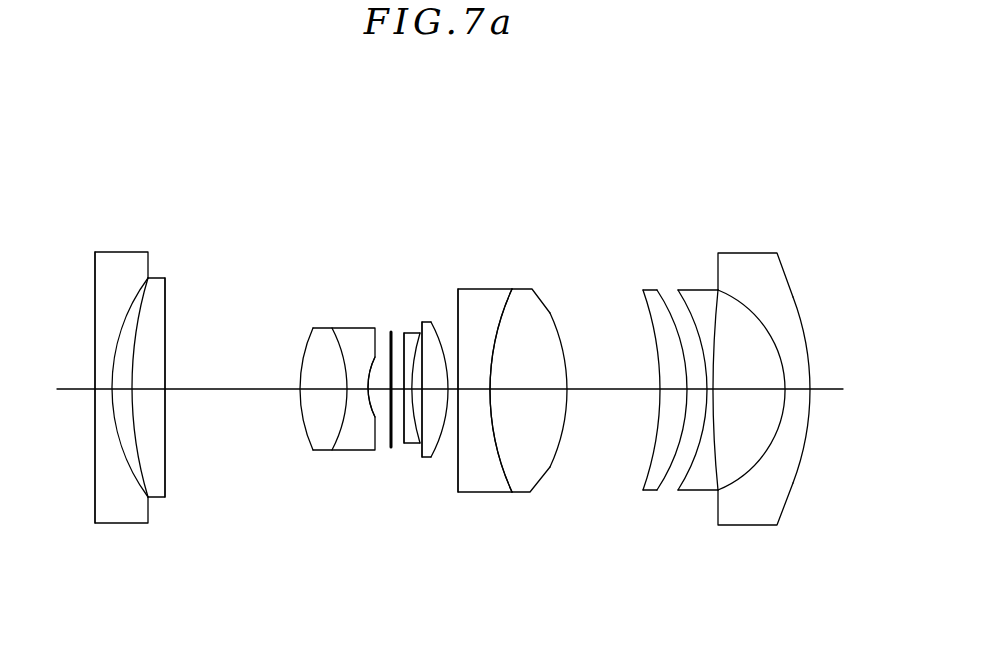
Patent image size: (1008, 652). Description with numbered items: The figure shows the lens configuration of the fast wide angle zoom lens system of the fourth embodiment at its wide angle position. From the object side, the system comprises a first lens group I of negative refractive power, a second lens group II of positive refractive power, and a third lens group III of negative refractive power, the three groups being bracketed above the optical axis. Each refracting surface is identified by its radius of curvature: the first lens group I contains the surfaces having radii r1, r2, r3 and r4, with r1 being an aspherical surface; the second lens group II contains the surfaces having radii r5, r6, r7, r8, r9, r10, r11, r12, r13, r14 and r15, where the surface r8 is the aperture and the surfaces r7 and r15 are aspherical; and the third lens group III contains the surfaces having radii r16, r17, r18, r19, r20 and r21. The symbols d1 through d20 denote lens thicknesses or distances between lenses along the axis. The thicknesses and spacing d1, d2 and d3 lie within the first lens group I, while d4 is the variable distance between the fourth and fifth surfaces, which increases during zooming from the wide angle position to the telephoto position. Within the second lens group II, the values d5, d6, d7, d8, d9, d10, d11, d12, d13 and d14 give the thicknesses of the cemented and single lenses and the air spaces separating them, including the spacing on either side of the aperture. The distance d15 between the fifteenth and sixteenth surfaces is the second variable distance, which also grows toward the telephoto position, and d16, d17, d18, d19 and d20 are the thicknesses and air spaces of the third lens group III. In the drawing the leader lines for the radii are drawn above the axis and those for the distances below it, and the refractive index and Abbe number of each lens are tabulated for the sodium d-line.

The first lens group I is at (70, 199).
The second lens group II is at (212, 122).
The third lens group III is at (870, 211).
The radius of curvature of first surface r1 is at (95, 373).
The radius of curvature of second surface r2 is at (113, 367).
The radius of curvature of third surface r3 is at (138, 373).
The radius of curvature of fourth surface r4 is at (166, 373).
The radius of curvature of fifth surface r5 is at (302, 367).
The radius of curvature of sixth surface r6 is at (342, 355).
The radius of curvature of seventh surface r7 is at (362, 357).
The aperture surface r8 is at (390, 332).
The radius of curvature of ninth surface r9 is at (411, 328).
The radius of curvature of tenth surface r10 is at (431, 322).
The radius of curvature of eleventh surface r11 is at (421, 325).
The radius of curvature of twelfth surface r12 is at (441, 323).
The radius of curvature of thirteenth surface r13 is at (470, 289).
The radius of curvature of fourteenth surface r14 is at (498, 340).
The radius of curvature of fifteenth surface r15 is at (550, 313).
The radius of curvature of sixteenth surface r16 is at (652, 323).
The radius of curvature of seventeenth surface r17 is at (667, 310).
The radius of curvature of eighteenth surface r18 is at (683, 327).
The radius of curvature of nineteenth surface r19 is at (712, 342).
The radius of curvature of twentieth surface r20 is at (772, 340).
The radius of curvature of twenty-first surface r21 is at (805, 343).
The lens thickness d1 is at (102, 389).
The distance d2 is at (123, 389).
The lens thickness d3 is at (148, 389).
The variable distance d4 is at (220, 389).
The lens thickness d5 is at (322, 389).
The lens thickness d6 is at (359, 389).
The distance d7 is at (378, 389).
The distance d8 is at (399, 389).
The lens thickness d9 is at (416, 389).
The distance d10 is at (427, 389).
The lens thickness d11 is at (435, 389).
The distance d12 is at (453, 389).
The lens thickness d13 is at (475, 389).
The lens thickness d14 is at (527, 389).
The variable distance d15 is at (613, 389).
The lens thickness d16 is at (672, 389).
The distance d17 is at (687, 389).
The lens thickness d18 is at (697, 389).
The distance d19 is at (765, 389).
The lens thickness d20 is at (799, 389).